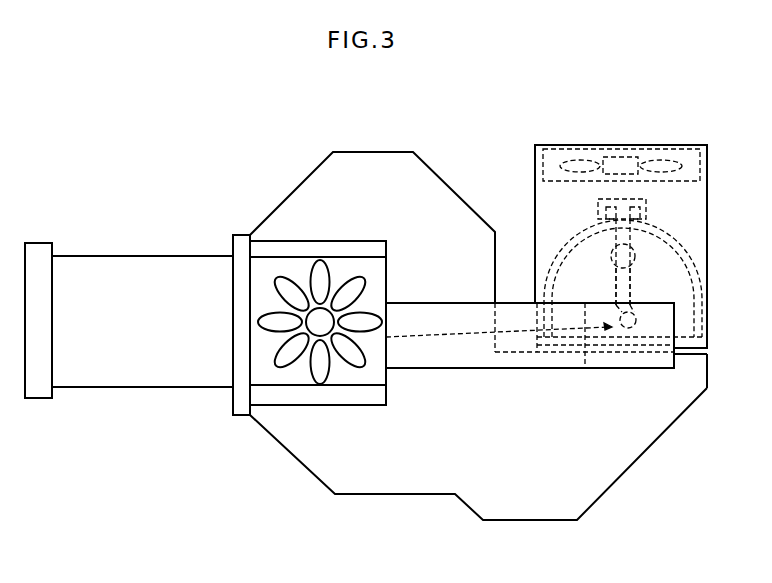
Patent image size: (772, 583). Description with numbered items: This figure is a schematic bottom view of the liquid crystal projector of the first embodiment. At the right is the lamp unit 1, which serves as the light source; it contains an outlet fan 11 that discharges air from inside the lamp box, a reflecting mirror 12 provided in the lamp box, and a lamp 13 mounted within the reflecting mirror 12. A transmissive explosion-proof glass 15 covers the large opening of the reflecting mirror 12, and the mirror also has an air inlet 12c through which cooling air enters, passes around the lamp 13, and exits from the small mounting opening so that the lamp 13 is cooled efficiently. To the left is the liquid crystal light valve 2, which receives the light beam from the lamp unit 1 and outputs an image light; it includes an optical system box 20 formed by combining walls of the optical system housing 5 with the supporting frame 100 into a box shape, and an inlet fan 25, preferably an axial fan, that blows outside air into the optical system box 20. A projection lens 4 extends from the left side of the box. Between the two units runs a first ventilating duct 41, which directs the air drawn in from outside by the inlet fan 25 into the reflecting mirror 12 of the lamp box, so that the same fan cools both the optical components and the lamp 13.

The lamp unit 1 is at (529, 170).
The outlet fan 11 is at (580, 160).
The reflecting mirror 12 is at (574, 242).
The air inlet 12c is at (623, 328).
The lamp 13 is at (628, 287).
The transmissive explosion-proof glass 15 is at (680, 335).
The liquid crystal light valve 2 is at (291, 395).
The optical system box 20 is at (268, 407).
The inlet fan 25 is at (322, 372).
The projection lens 4 is at (125, 270).
The first ventilating duct 41 is at (473, 368).
The housing 5 is at (317, 166).
The supporting frame 100 is at (278, 250).